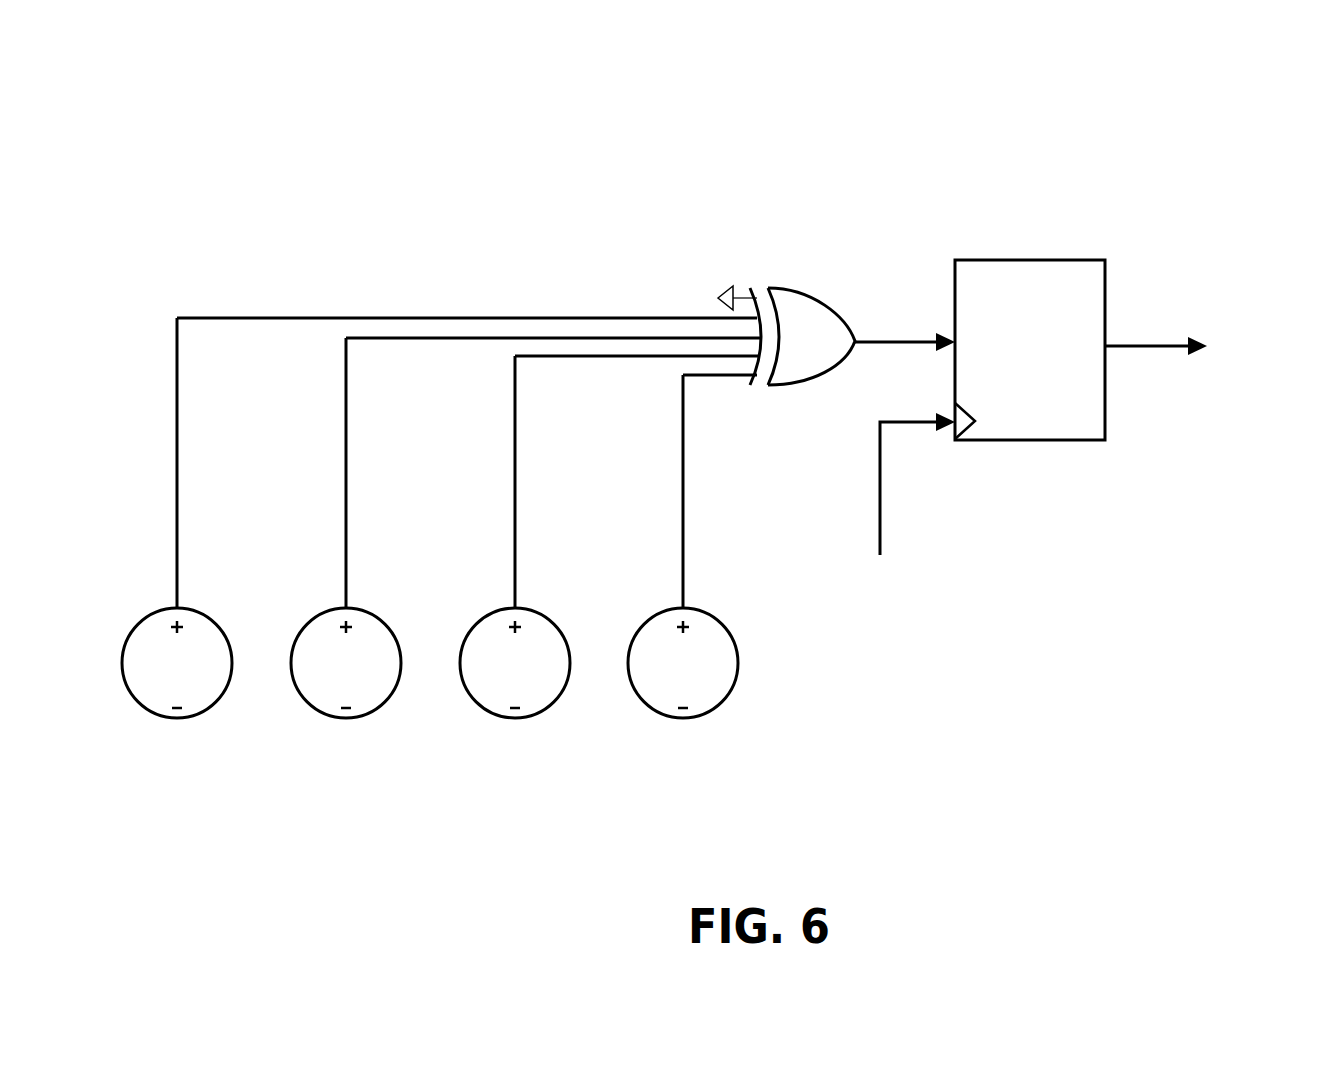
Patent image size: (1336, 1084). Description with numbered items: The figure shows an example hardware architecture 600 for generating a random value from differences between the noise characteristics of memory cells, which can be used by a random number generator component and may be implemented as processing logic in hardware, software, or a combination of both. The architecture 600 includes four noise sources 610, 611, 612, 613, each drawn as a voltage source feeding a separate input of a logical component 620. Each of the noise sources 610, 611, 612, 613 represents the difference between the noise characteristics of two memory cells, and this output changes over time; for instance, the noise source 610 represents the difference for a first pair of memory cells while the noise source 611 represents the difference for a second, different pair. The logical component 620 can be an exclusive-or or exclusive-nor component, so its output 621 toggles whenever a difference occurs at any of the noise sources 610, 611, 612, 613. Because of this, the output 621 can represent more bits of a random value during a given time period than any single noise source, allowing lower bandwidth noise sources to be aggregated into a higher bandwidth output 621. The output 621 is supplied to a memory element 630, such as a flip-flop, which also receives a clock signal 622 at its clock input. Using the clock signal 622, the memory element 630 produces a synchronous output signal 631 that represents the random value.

The hardware architecture 600 is at (1209, 108).
The noise source 610 is at (193, 719).
The noise source 611 is at (362, 719).
The noise source 612 is at (531, 719).
The noise source 613 is at (699, 719).
The logical component 620 is at (797, 289).
The output 621 is at (878, 342).
The clock signal 622 is at (880, 535).
The memory element 630 is at (1030, 350).
The synchronous output signal 631 is at (1140, 346).